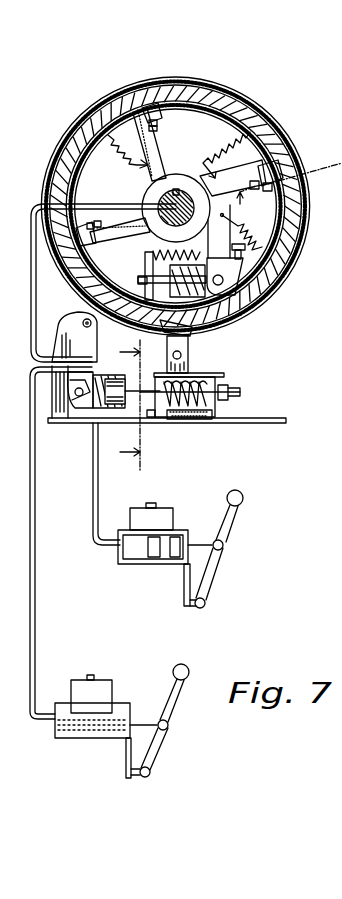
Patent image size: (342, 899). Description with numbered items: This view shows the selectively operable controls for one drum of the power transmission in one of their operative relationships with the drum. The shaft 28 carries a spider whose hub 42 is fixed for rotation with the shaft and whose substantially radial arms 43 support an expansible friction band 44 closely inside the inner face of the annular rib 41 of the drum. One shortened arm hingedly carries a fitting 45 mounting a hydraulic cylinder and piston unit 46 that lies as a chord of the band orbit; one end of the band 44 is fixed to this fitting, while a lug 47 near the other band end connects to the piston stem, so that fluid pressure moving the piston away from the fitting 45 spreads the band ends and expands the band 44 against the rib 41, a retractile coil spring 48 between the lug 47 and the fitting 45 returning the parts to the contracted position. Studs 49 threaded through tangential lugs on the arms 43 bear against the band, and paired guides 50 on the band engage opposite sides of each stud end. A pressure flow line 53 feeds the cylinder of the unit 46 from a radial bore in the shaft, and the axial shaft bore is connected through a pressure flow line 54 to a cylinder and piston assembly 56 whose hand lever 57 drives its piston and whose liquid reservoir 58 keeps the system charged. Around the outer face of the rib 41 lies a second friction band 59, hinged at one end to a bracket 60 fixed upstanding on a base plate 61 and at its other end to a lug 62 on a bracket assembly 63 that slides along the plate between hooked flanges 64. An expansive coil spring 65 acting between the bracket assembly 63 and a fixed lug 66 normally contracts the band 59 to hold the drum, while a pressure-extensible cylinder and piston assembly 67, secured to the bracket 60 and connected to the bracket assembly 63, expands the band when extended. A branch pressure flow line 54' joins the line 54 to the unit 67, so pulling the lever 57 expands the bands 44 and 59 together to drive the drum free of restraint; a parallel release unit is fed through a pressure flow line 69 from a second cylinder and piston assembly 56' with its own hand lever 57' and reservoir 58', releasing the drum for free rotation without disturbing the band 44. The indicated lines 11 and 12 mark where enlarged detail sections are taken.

The indicated section line 11 is at (123, 405).
The axis line 12 is at (328, 156).
The shaft 28 is at (181, 187).
The rib 41 is at (254, 116).
The spider hub 42 is at (170, 178).
The spider arms 43 is at (142, 170).
The friction band 44 is at (208, 101).
The fitting 45 is at (243, 266).
The hydraulic cylinder and piston unit 46 is at (166, 321).
The lug 47 is at (144, 270).
The retractile coil spring 48 is at (145, 249).
The studs 49 is at (166, 128).
The paired guides 50 is at (266, 168).
The pressure flow line 53 is at (168, 252).
The pressure flow line 54 is at (88, 461).
The branch pressure flow line 54' is at (53, 367).
The cylinder and piston assembly 56 is at (106, 740).
The cylinder and piston assembly 56' is at (165, 568).
The hand lever 57 is at (174, 713).
The hand lever 57' is at (236, 541).
The liquid reservoir 58 is at (91, 682).
The reservoir 58' is at (160, 506).
The friction band 59 is at (197, 82).
The bracket 60 is at (78, 326).
The base plate 61 is at (279, 422).
The lug 62 is at (190, 363).
The bracket assembly 63 is at (227, 373).
The hooked flanges 64 is at (204, 418).
The expansive coil spring 65 is at (172, 383).
The lug 66 is at (214, 410).
The cylinder and piston assembly 67 is at (104, 380).
The pressure flow line 69 is at (99, 506).